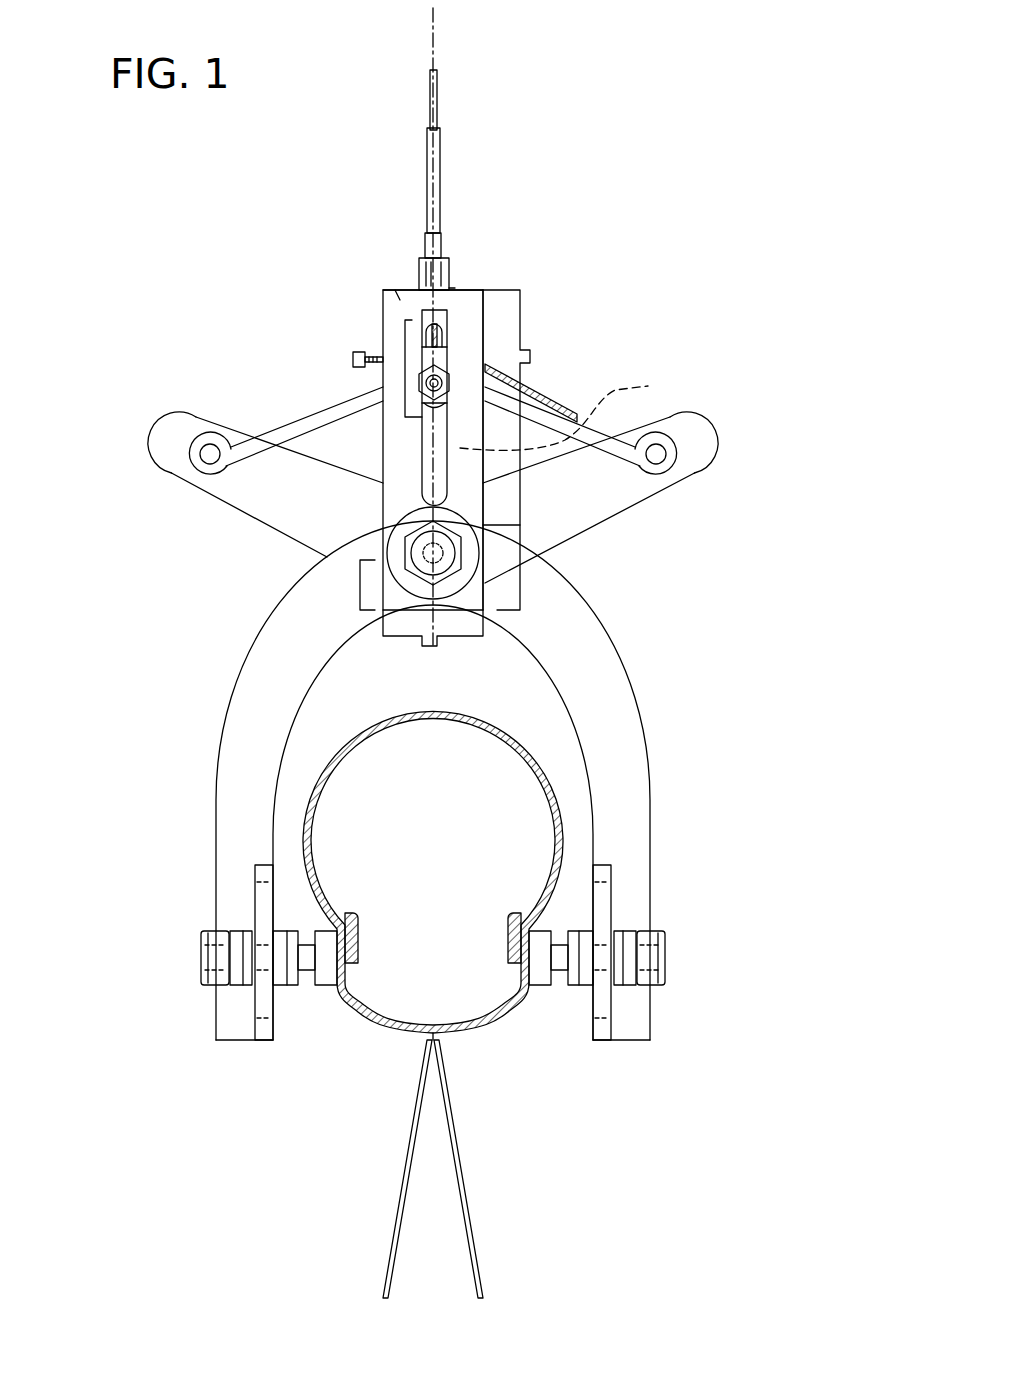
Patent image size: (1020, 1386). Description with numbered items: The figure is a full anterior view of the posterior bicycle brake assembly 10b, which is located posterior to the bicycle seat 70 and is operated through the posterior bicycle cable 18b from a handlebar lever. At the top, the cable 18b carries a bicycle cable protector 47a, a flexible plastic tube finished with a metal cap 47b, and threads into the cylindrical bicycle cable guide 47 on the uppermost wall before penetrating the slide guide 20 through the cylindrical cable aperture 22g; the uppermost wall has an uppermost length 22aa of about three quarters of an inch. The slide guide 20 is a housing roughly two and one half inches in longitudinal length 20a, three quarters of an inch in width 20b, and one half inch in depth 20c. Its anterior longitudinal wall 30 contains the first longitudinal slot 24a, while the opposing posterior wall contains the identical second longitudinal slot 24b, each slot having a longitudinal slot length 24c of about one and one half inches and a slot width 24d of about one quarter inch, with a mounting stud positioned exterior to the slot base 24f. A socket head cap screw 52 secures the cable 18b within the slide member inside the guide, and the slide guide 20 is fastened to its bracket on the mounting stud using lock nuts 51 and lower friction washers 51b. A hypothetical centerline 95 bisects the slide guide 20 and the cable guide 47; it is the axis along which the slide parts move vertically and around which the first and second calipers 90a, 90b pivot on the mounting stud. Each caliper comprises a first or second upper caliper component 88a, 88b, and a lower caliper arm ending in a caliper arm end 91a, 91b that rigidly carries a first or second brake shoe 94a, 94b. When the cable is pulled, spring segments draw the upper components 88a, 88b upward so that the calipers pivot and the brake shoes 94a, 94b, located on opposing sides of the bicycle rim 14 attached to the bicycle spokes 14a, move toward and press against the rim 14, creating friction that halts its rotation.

The posterior bicycle brake assembly 10b is at (683, 201).
The bicycle rim 14 is at (472, 1033).
The bicycle spokes 14a is at (468, 1193).
The posterior bicycle cable 18b is at (440, 112).
The slide guide 20 is at (486, 293).
The longitudinal length 20a is at (532, 356).
The width 20b is at (433, 647).
The depth 20c is at (372, 583).
The uppermost length 22aa is at (400, 300).
The cylindrical cable aperture 22g is at (452, 288).
The first longitudinal slot 24a is at (405, 415).
The second longitudinal slot 24b is at (576, 412).
The longitudinal slot length 24c is at (337, 422).
The slot width 24d is at (444, 305).
The slot base 24f is at (483, 505).
The anterior longitudinal wall 30 is at (400, 305).
The cylindrical bicycle cable guide 47 is at (421, 266).
The bicycle cable protector 47a is at (426, 140).
The metal cap 47b is at (442, 245).
The lock nuts 51 is at (420, 543).
The lower friction washers 51b is at (530, 535).
The socket head cap screw 52 is at (353, 360).
The bicycle seat 70 is at (410, 712).
The first upper caliper component 88a is at (663, 493).
The second upper caliper component 88b is at (200, 487).
The first caliper 90a is at (218, 770).
The second caliper 90b is at (652, 770).
The first caliper arm end 91a is at (242, 1041).
The second caliper arm end 91b is at (624, 1041).
The first brake shoe 94a is at (333, 987).
The second brake shoe 94b is at (533, 987).
The hypothetical centerline 95 is at (436, 10).